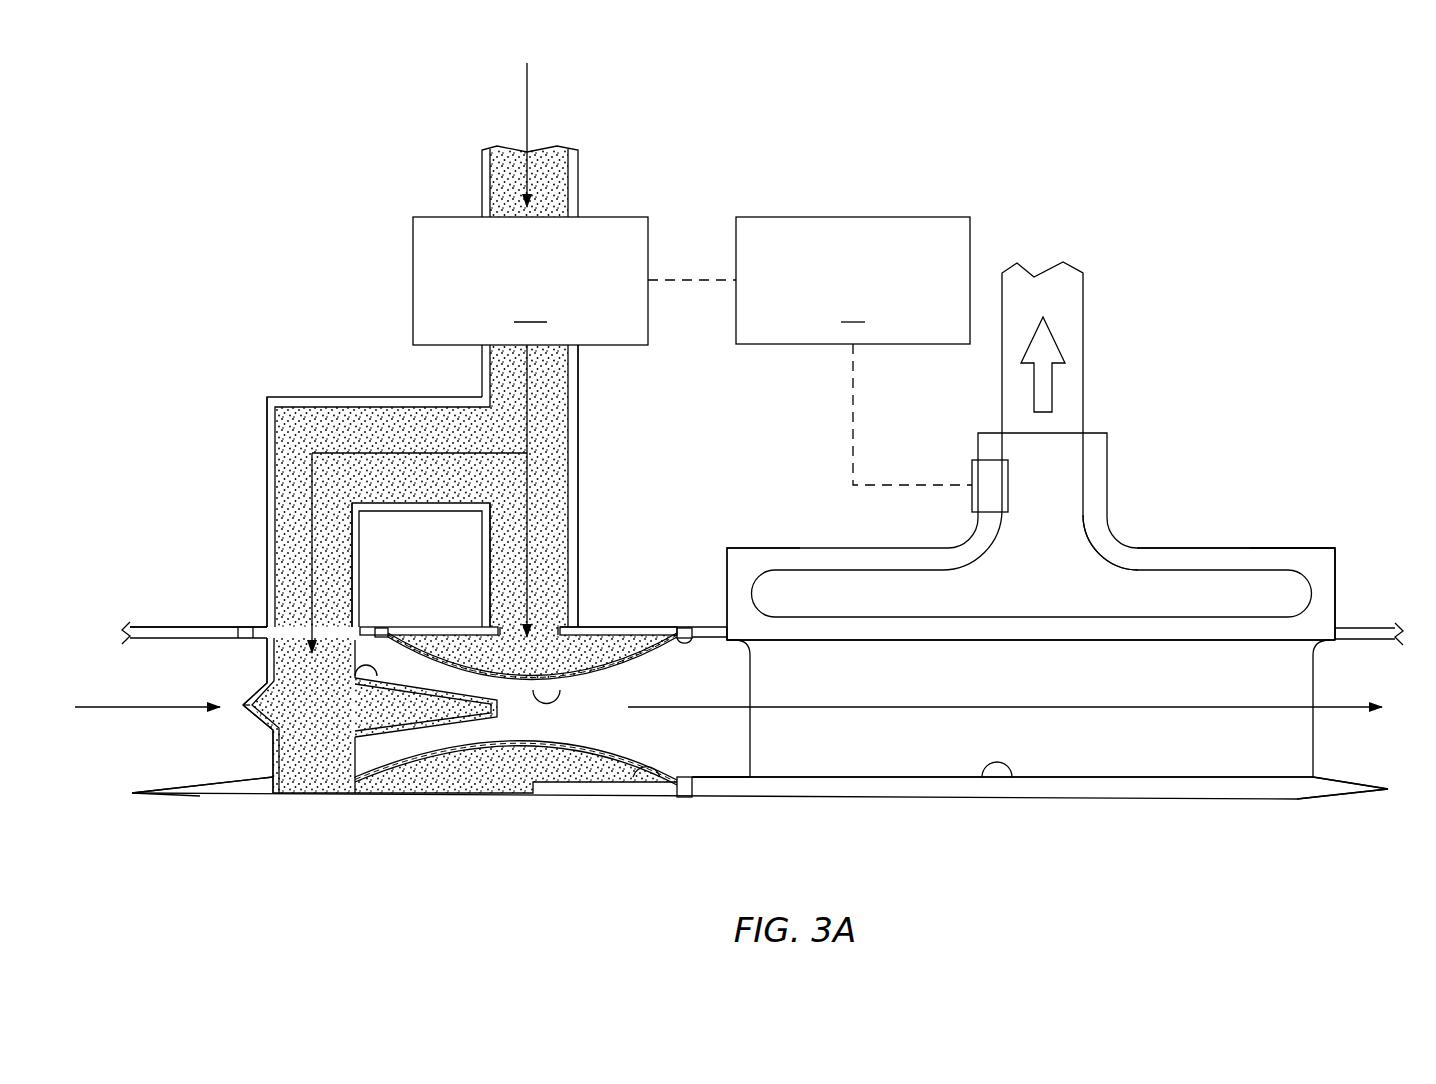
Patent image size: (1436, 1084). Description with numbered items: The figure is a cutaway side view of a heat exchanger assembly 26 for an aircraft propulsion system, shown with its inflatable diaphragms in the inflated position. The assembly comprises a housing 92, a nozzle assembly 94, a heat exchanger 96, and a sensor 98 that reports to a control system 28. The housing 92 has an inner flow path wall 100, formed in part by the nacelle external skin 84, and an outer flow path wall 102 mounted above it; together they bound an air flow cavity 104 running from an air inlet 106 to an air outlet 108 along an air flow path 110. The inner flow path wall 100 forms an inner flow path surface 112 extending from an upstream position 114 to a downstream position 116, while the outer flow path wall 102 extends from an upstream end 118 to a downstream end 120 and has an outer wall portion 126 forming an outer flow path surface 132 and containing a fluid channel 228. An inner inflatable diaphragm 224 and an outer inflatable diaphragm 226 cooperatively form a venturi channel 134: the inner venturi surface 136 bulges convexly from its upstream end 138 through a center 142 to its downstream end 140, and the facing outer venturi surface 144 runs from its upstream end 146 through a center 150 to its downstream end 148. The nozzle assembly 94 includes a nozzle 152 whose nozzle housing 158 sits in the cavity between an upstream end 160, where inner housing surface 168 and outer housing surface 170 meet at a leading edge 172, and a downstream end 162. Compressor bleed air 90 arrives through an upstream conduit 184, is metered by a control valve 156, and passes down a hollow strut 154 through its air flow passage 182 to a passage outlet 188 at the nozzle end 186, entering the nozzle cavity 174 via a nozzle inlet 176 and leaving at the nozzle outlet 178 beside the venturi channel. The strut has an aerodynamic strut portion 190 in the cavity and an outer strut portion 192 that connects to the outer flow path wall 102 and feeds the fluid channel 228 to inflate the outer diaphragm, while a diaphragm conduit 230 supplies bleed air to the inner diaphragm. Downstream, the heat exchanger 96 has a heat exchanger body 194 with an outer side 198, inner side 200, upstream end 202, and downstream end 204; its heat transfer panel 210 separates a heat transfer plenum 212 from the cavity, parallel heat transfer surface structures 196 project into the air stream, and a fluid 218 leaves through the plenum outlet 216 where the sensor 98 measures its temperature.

The heat exchanger assembly 26 is at (1292, 258).
The control system 28 is at (810, 351).
The nacelle external skin 84 is at (143, 625).
The compressor bleed air 90 is at (530, 100).
The housing 92 is at (410, 848).
The nozzle assembly 94 is at (213, 403).
The heat exchanger 96 is at (1235, 520).
The sensor 98 is at (968, 475).
The inner flow path wall 100 is at (220, 615).
The outer flow path wall 102 is at (940, 812).
The air flow cavity 104 is at (712, 665).
The air inlet 106 is at (128, 770).
The air outlet 108 is at (1398, 797).
The air flow path 110 is at (120, 710).
The inner flow path surface 112 is at (198, 627).
The upstream position 114 is at (163, 645).
The downstream position 116 is at (1382, 650).
The upstream end 118 is at (128, 800).
The downstream end 120 is at (1397, 787).
The outer wall portion 126 is at (840, 795).
The outer flow path surface 132 is at (1012, 790).
The venturi channel 134 is at (620, 790).
The inner venturi surface 136 is at (440, 633).
The upstream end 138 is at (375, 625).
The downstream end 140 is at (690, 640).
The center 142 is at (553, 675).
The outer venturi surface 144 is at (660, 790).
The upstream end 146 is at (370, 793).
The downstream end 148 is at (715, 790).
The center 150 is at (540, 730).
The nozzle 152 is at (470, 788).
The strut 154 is at (273, 460).
The control valve 156 is at (530, 281).
The nozzle housing 158 is at (410, 790).
The upstream end 160 is at (235, 700).
The downstream end 162 is at (520, 785).
The inner housing surface 168 is at (262, 665).
The outer housing surface 170 is at (335, 790).
The leading edge 172 is at (243, 706).
The nozzle cavity 174 is at (380, 705).
The nozzle inlet 176 is at (325, 670).
The nozzle outlet 178 is at (510, 692).
The air flow passage 182 is at (290, 512).
The upstream conduit 184 is at (583, 176).
The nozzle end 186 is at (377, 675).
The passage outlet 188 is at (290, 665).
The aerodynamic strut portion 190 is at (252, 627).
The outer strut portion 192 is at (270, 748).
The heat exchanger body 194 is at (1300, 560).
The heat transfer surface structures 196 is at (1192, 743).
The outer side 198 is at (860, 648).
The inner side 200 is at (1172, 540).
The upstream end 202 is at (725, 548).
The downstream end 204 is at (1338, 560).
The heat transfer panel 210 is at (1045, 625).
The heat transfer plenum 212 is at (1110, 590).
The plenum outlet 216 is at (1080, 450).
The fluid 218 is at (1055, 390).
The inner inflatable diaphragm 224 is at (643, 640).
The outer inflatable diaphragm 226 is at (567, 790).
The fluid channel 228 is at (500, 810).
The diaphragm conduit 230 is at (580, 490).